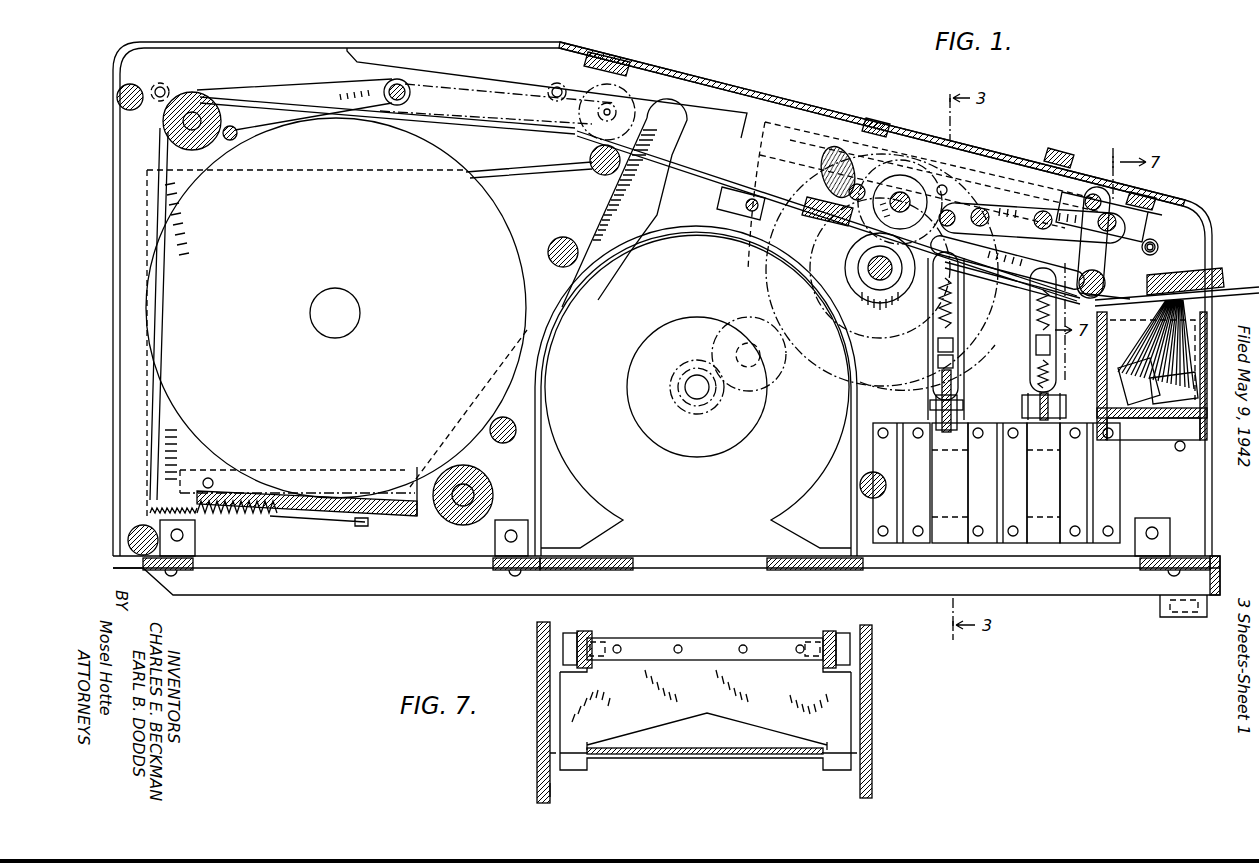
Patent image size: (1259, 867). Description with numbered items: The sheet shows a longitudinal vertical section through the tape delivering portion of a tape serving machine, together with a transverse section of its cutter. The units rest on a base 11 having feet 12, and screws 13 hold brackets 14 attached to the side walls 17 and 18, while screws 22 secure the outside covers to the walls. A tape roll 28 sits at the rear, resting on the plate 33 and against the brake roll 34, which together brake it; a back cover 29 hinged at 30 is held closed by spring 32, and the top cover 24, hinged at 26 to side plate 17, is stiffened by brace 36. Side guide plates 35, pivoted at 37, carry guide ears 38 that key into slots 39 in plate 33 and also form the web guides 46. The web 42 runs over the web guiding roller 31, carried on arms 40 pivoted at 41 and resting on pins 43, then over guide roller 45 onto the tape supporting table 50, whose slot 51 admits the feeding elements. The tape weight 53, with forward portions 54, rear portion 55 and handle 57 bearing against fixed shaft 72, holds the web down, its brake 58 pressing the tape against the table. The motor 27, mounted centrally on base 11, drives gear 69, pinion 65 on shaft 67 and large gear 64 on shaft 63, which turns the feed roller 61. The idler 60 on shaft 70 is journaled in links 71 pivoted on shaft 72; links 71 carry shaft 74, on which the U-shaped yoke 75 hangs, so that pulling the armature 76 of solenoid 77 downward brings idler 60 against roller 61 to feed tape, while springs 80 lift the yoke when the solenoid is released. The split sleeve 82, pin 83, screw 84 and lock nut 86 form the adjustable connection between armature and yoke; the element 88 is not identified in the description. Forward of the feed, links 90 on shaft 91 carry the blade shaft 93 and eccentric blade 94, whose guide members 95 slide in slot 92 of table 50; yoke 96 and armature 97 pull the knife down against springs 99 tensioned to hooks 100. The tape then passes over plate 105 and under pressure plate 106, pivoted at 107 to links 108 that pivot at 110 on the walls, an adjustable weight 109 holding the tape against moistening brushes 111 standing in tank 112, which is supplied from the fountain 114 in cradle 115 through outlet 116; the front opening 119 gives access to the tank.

In FIG. 1, the base 11 is at (1100, 595).
In FIG. 1, the feet 12 is at (1182, 617).
In FIG. 1, the screws 13 is at (184, 575).
In FIG. 1, the brackets 14 is at (195, 546).
In FIG. 1, the side wall 17 is at (768, 118).
In FIG. 7, the side wall 17 is at (872, 650).
In FIG. 7, the side wall 18 is at (537, 650).
In FIG. 1, the screws 22 is at (165, 88).
In FIG. 1, the top cover 24 is at (686, 80).
In FIG. 1, the hinge 26 is at (626, 60).
In FIG. 1, the motor 27 is at (582, 478).
In FIG. 1, the tape roll 28 is at (500, 212).
In FIG. 1, the cover 29 is at (113, 312).
In FIG. 1, the hinge 30 is at (128, 541).
In FIG. 1, the web guiding roller 31 is at (198, 98).
In FIG. 1, the spring 32 is at (250, 515).
In FIG. 1, the plate 33 is at (378, 518).
In FIG. 1, the brake roll 34 is at (451, 507).
In FIG. 1, the side guide plates 35 is at (516, 172).
In FIG. 1, the brace 36 is at (556, 48).
In FIG. 1, the pivot 37 is at (566, 238).
In FIG. 1, the guide ears 38 is at (150, 497).
In FIG. 1, the slots 39 is at (198, 518).
In FIG. 1, the arms 40 is at (306, 92).
In FIG. 1, the pivot 41 is at (393, 86).
In FIG. 1, the tape web 42 is at (694, 168).
In FIG. 7, the tape web 42 is at (607, 750).
In FIG. 1, the pins 43 is at (237, 138).
In FIG. 1, the guide roller 45 is at (590, 160).
In FIG. 1, the web guides 46 is at (682, 133).
In FIG. 1, the tape supporting table 50 is at (720, 200).
In FIG. 7, the tape supporting table 50 is at (552, 790).
In FIG. 1, the slot 51 is at (836, 262).
In FIG. 1, the tape weight 53 is at (1010, 256).
In FIG. 1, the forward portions 54 is at (975, 244).
In FIG. 1, the rear portion 55 is at (792, 272).
In FIG. 1, the handle 57 is at (830, 156).
In FIG. 1, the brake 58 is at (805, 200).
In FIG. 1, the idler 60 is at (895, 180).
In FIG. 1, the feed roller 61 is at (882, 304).
In FIG. 1, the shaft 63 is at (868, 268).
In FIG. 1, the large gear 64 is at (914, 386).
In FIG. 1, the pinion 65 is at (778, 372).
In FIG. 1, the shaft 67 is at (748, 380).
In FIG. 1, the gear 69 is at (698, 410).
In FIG. 1, the shaft 70 is at (908, 195).
In FIG. 1, the links 71 is at (861, 187).
In FIG. 1, the fixed shaft 72 is at (858, 222).
In FIG. 1, the shaft 74 is at (953, 210).
In FIG. 1, the U-shaped yoke 75 is at (930, 316).
In FIG. 1, the armature 76 is at (950, 440).
In FIG. 1, the solenoid 77 is at (975, 505).
In FIG. 1, the springs 80 is at (952, 298).
In FIG. 1, the split sleeve 82 is at (958, 395).
In FIG. 1, the pin 83 is at (1030, 404).
In FIG. 1, the screw 84 is at (958, 345).
In FIG. 1, the lock nut 86 is at (958, 359).
In FIG. 1, the relay 88 is at (1072, 515).
In FIG. 1, the links 90 is at (1043, 211).
In FIG. 7, the links 90 is at (586, 631).
In FIG. 1, the shaft 91 is at (983, 208).
In FIG. 7, the slot 92 is at (660, 755).
In FIG. 1, the blade shaft 93 is at (1104, 256).
In FIG. 7, the blade shaft 93 is at (765, 640).
In FIG. 1, the blade 94 is at (1104, 275).
In FIG. 7, the blade 94 is at (840, 690).
In FIG. 7, the guide members 95 is at (572, 770).
In FIG. 1, the yoke 96 is at (1033, 346).
In FIG. 1, the armature 97 is at (1056, 386).
In FIG. 1, the springs 99 is at (1056, 366).
In FIG. 1, the hooks 100 is at (988, 290).
In FIG. 1, the plate 105 is at (1125, 312).
In FIG. 1, the pressure plate 106 is at (1162, 276).
In FIG. 1, the pivot 107 is at (1110, 290).
In FIG. 1, the links 108 is at (1102, 217).
In FIG. 1, the adjustable weight 109 is at (1158, 247).
In FIG. 1, the pivot 110 is at (1093, 194).
In FIG. 1, the moistening brushes 111 is at (1205, 301).
In FIG. 1, the tank 112 is at (1207, 366).
In FIG. 1, the fountain 114 is at (812, 122).
In FIG. 1, the cradle 115 is at (810, 172).
In FIG. 1, the outlet 116 is at (1150, 220).
In FIG. 1, the front opening 119 is at (1205, 458).